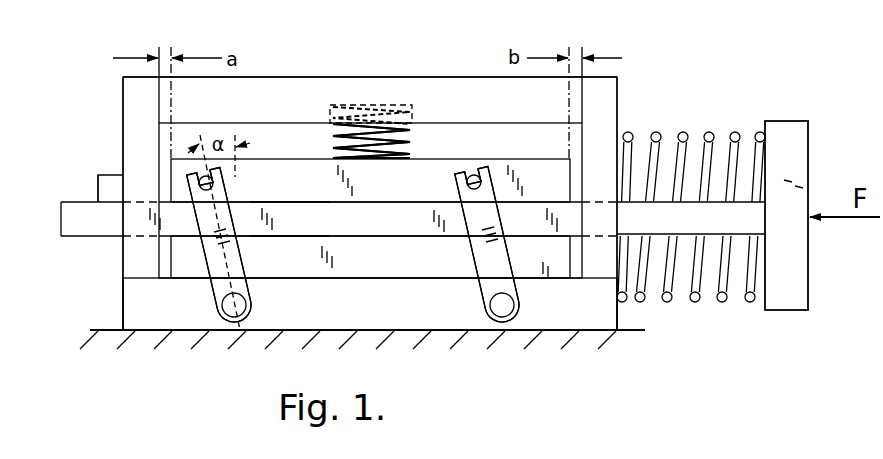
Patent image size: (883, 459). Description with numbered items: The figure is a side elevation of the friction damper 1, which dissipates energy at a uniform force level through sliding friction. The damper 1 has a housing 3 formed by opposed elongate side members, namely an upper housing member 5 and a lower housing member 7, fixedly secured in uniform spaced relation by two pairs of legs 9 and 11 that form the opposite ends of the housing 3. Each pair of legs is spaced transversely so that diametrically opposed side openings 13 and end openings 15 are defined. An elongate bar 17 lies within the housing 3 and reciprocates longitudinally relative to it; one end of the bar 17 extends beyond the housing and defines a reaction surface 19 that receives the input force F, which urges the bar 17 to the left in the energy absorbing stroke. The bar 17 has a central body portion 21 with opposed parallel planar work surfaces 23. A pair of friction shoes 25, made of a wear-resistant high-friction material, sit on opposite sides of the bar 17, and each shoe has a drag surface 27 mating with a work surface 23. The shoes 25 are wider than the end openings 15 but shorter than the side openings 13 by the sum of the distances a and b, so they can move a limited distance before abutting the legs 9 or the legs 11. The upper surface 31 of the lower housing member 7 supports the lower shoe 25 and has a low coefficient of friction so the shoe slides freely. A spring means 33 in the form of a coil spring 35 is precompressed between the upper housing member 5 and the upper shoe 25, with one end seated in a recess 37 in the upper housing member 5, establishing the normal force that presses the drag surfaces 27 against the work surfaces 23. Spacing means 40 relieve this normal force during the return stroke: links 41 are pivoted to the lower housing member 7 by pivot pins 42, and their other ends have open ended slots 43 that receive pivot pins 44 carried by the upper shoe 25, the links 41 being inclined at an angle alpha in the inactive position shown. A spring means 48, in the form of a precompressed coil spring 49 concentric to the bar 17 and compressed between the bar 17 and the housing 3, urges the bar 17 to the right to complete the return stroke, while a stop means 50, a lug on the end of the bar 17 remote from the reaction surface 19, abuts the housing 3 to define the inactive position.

The damper 1 is at (658, 84).
The housing 3 is at (318, 75).
The upper housing member 5 is at (430, 90).
The lower housing member 7 is at (440, 330).
The legs 9 is at (125, 268).
The legs 11 is at (600, 135).
The side openings 13 is at (262, 130).
The end openings 15 is at (120, 253).
The bar 17 is at (412, 222).
The reaction surface 19 is at (809, 141).
The central body portion 21 is at (300, 237).
The work surfaces 23 is at (320, 202).
The friction shoes 25 is at (365, 191).
The drag surface 27 is at (285, 203).
The upper surface 31 is at (318, 278).
The spring means 33 is at (416, 139).
The coil spring 35 is at (412, 151).
The recess 37 is at (343, 107).
The spacing means 40 is at (211, 293).
The links 41 is at (217, 257).
The pivot pins 42 is at (243, 318).
The open ended slots 43 is at (197, 174).
The pivot pins 44 is at (214, 182).
The spring means 48 is at (725, 303).
The coil spring 49 is at (712, 132).
The stop means 50 is at (110, 175).